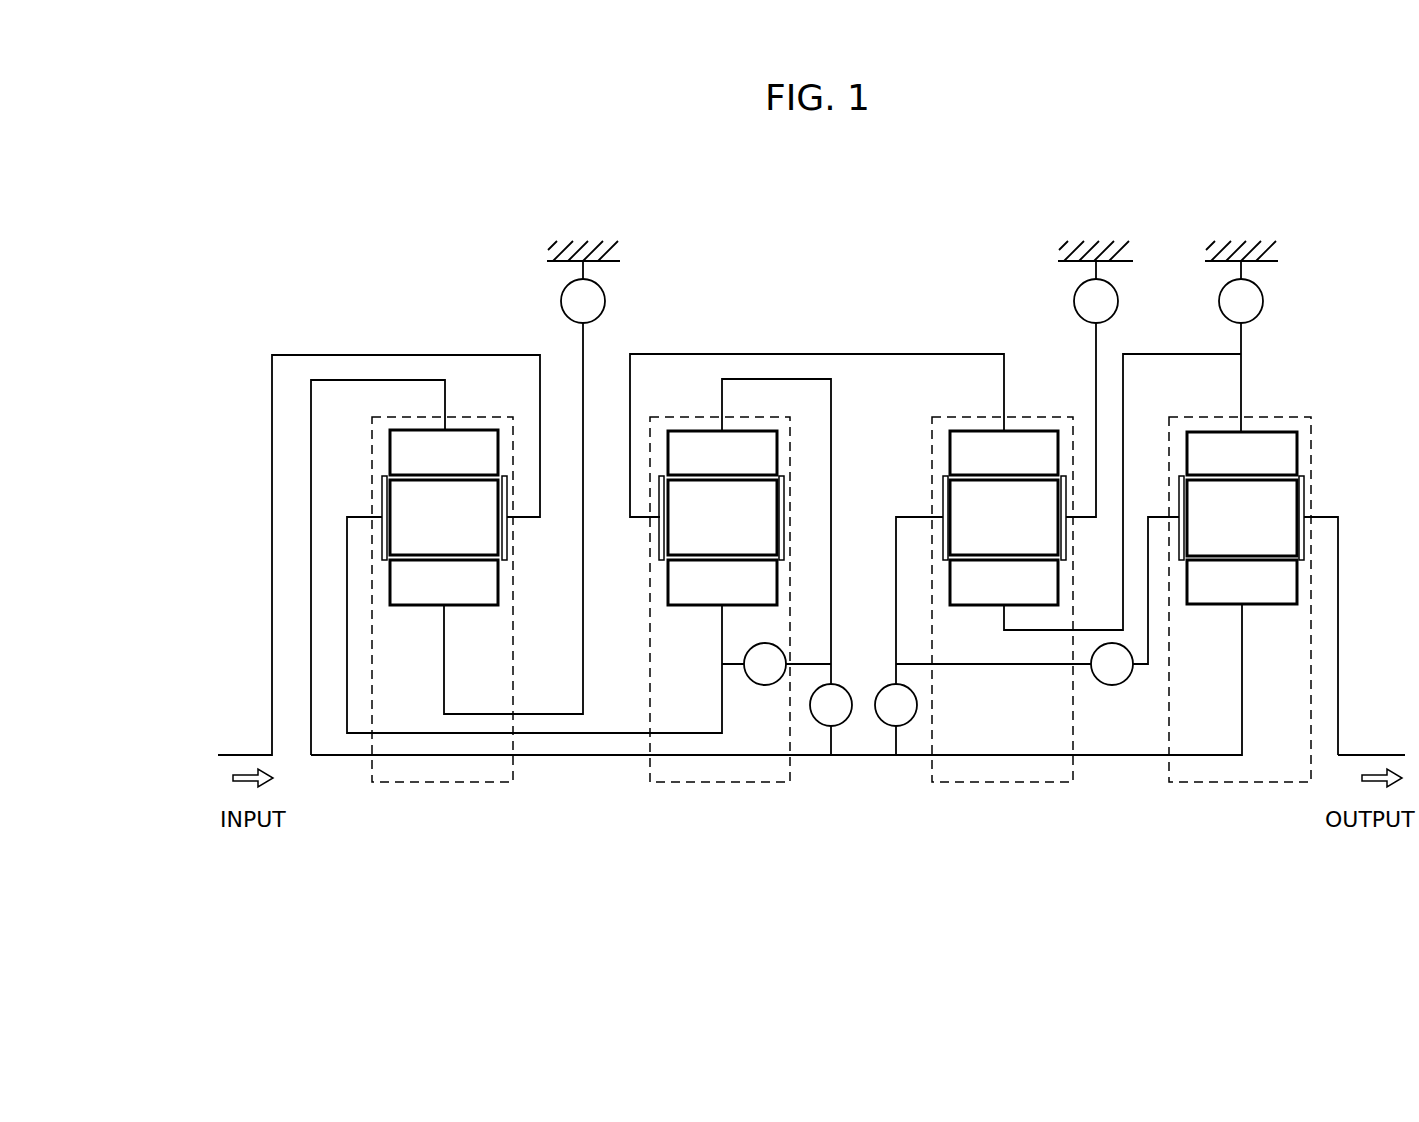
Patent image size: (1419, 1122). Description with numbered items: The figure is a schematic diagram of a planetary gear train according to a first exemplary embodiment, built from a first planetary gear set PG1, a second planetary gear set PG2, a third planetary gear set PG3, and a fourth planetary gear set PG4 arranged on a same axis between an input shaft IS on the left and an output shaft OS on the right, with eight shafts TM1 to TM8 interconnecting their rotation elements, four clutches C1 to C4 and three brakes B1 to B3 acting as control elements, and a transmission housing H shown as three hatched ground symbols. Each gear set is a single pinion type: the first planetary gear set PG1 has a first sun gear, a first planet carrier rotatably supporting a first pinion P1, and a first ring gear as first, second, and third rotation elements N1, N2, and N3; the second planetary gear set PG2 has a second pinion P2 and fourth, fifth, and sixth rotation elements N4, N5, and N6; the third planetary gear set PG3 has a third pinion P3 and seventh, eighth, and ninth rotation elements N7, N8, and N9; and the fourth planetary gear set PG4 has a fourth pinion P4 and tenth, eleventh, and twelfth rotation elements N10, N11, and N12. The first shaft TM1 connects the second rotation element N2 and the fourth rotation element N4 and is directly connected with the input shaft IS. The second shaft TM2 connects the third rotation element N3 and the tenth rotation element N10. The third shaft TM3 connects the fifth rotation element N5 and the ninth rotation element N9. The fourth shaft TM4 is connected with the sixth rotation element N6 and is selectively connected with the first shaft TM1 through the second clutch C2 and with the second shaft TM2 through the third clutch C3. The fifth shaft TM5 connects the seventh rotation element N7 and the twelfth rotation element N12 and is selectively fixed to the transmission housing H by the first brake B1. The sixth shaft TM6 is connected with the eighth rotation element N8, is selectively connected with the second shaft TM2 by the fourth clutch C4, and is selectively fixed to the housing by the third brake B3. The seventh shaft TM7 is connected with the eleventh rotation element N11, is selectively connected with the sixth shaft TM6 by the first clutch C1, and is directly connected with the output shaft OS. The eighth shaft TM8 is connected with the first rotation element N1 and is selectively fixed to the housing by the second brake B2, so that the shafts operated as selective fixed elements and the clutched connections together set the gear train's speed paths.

The transmission housing H is at (579, 242).
The first brake B1 is at (1241, 292).
The second brake B2 is at (583, 292).
The third brake B3 is at (1096, 292).
The first clutch C1 is at (1037, 601).
The second clutch C2 is at (776, 664).
The third clutch C3 is at (831, 705).
The fourth clutch C4 is at (909, 636).
The input shaft IS is at (246, 752).
The output shaft OS is at (1378, 752).
The first shaft TM1 is at (358, 737).
The second shaft TM2 is at (1123, 758).
The third shaft TM3 is at (819, 352).
The fourth shaft TM4 is at (833, 397).
The fifth shaft TM5 is at (1181, 352).
The sixth shaft TM6 is at (1094, 347).
The seventh shaft TM7 is at (1340, 560).
The eighth shaft TM8 is at (552, 718).
The first planetary gear set PG1 is at (405, 795).
The second planetary gear set PG2 is at (682, 795).
The third planetary gear set PG3 is at (965, 795).
The fourth planetary gear set PG4 is at (1203, 795).
The first rotation element N1 is at (444, 582).
The second rotation element N2 is at (509, 545).
The third rotation element N3 is at (444, 452).
The fourth rotation element N4 is at (722, 582).
The fifth rotation element N5 is at (657, 545).
The sixth rotation element N6 is at (722, 453).
The seventh rotation element N7 is at (1004, 582).
The eighth rotation element N8 is at (941, 497).
The ninth rotation element N9 is at (1004, 453).
The tenth rotation element N10 is at (1242, 582).
The eleventh rotation element N11 is at (1306, 490).
The twelfth rotation element N12 is at (1242, 453).
The first pinion P1 is at (444, 517).
The second pinion P2 is at (722, 517).
The third pinion P3 is at (1004, 517).
The fourth pinion P4 is at (1242, 518).